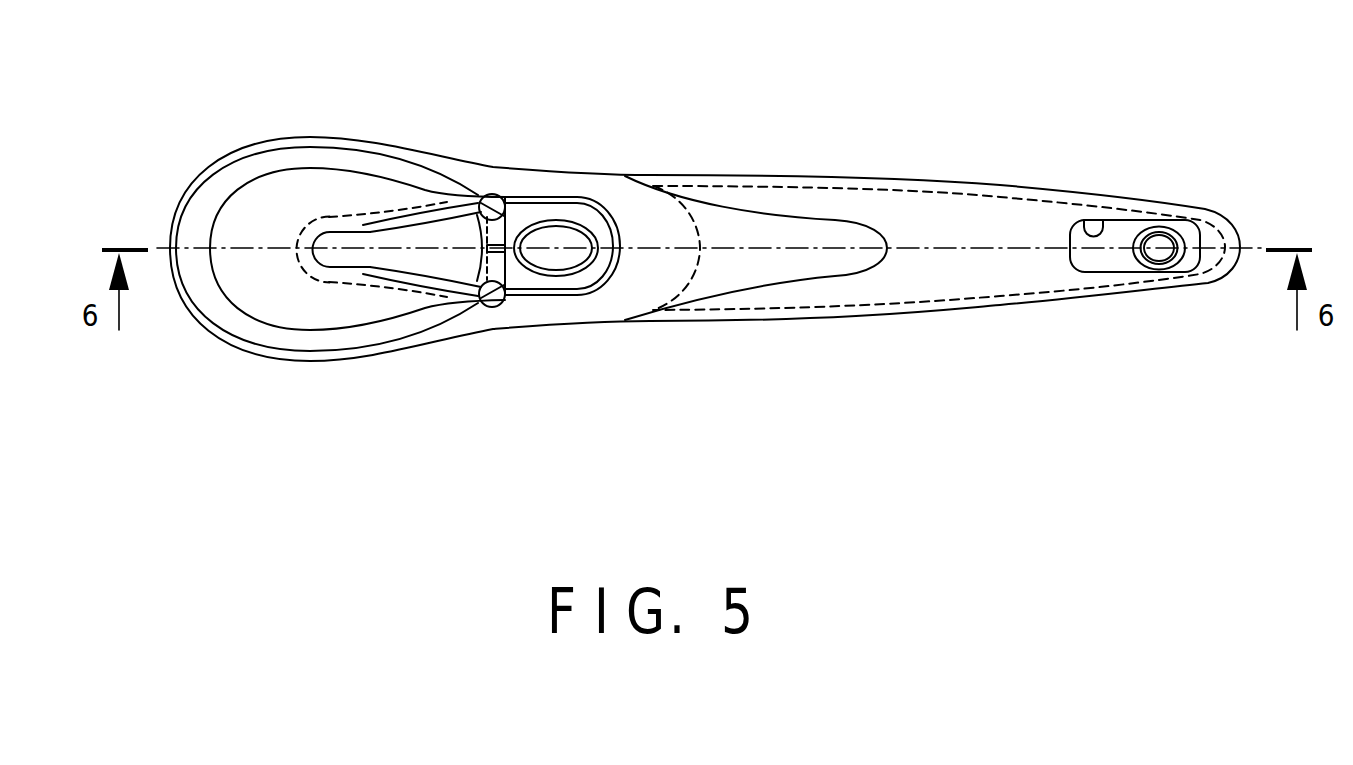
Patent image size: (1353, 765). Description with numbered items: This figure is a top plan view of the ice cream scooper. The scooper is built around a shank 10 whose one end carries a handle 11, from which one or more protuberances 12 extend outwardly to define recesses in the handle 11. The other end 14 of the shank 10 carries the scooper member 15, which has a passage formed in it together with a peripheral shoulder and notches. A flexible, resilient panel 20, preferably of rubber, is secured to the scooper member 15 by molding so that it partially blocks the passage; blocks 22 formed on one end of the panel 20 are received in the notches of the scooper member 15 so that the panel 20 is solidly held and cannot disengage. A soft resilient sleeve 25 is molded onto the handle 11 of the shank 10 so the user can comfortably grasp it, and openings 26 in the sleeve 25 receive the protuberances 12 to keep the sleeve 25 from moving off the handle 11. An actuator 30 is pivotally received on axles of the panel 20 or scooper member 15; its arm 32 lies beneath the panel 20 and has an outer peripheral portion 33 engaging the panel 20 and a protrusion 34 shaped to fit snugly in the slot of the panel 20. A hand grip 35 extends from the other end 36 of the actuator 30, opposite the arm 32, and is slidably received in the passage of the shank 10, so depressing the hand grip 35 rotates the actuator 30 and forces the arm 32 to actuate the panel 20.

The shank 10 is at (620, 206).
The handle 11 is at (955, 272).
The protuberances 12 is at (810, 232).
The other end 14 is at (222, 337).
The scooper member 15 is at (207, 207).
The panel 20 is at (288, 190).
The blocks 22 is at (492, 194).
The sleeve 25 is at (903, 180).
The openings 26 is at (1082, 222).
The actuator 30 is at (537, 282).
The arm 32 is at (350, 292).
The outer peripheral portion 33 is at (325, 268).
The protrusion 34 is at (348, 247).
The hand grip 35 is at (572, 237).
The other end 36 is at (608, 282).